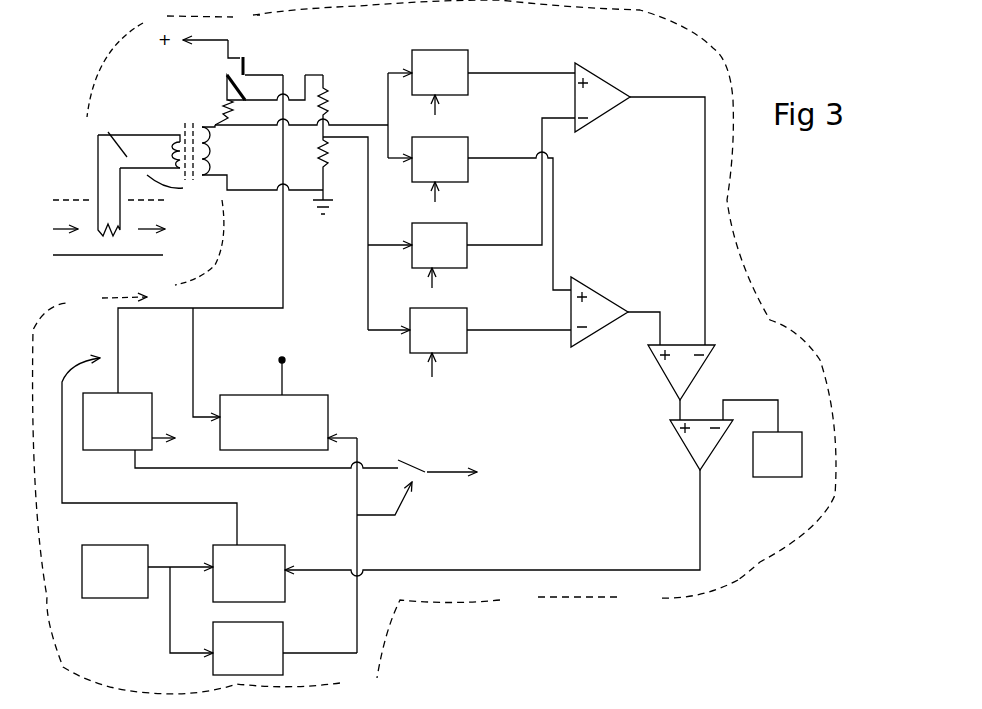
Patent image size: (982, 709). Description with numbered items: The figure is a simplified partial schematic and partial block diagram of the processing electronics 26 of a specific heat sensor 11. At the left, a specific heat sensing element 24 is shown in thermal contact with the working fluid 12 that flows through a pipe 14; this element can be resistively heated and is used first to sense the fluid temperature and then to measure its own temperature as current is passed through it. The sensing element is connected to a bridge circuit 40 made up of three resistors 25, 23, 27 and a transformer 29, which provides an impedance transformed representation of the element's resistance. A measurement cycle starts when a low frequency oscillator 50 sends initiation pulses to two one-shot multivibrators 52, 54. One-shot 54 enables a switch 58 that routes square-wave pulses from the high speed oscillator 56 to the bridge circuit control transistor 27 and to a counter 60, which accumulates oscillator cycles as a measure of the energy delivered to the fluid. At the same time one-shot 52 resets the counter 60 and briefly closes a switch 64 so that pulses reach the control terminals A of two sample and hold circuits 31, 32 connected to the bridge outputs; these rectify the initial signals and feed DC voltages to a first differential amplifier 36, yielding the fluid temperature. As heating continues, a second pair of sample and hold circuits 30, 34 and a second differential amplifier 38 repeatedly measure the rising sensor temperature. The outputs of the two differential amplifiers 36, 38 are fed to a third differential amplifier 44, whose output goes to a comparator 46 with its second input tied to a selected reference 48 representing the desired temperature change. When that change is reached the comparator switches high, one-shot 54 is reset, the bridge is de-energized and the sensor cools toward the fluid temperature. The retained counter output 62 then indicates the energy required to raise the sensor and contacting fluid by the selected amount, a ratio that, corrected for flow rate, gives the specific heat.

The specific heat sensor 11 is at (500, 608).
The working fluid 12 is at (165, 226).
The pipe 14 is at (65, 200).
The resistor 23 is at (330, 100).
The specific heat sensing element 24 is at (105, 237).
The resistor 25 is at (222, 105).
The processing electronics 26 is at (712, 600).
The bridge circuit control transistor 27 is at (243, 63).
The transformer 29 is at (188, 125).
The sample and hold circuit 30 is at (470, 143).
The sample and hold circuit 31 is at (470, 58).
The sample and hold circuit 32 is at (467, 232).
The sample and hold circuit 34 is at (467, 318).
The first differential amplifier 36 is at (605, 80).
The second differential amplifier 38 is at (578, 283).
The bridge circuit 40 is at (335, 66).
The third differential amplifier 44 is at (695, 377).
The comparator 46 is at (685, 445).
The reference 48 is at (793, 430).
The low frequency oscillator 50 is at (127, 600).
The one-shot multivibrator 52 is at (213, 667).
The one-shot multivibrator 54 is at (213, 556).
The high speed oscillator 56 is at (102, 450).
The switch 58 is at (146, 436).
The counter 60 is at (328, 402).
The counter output 62 is at (288, 360).
The switch 64 is at (418, 465).